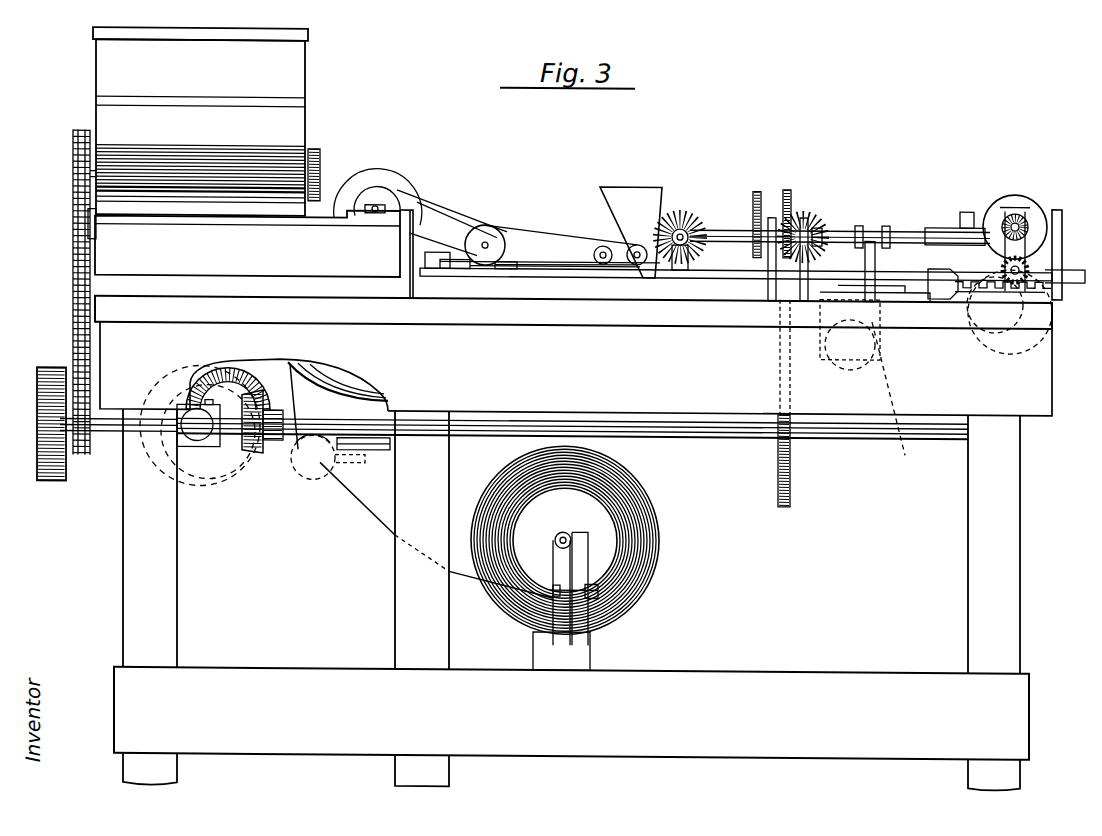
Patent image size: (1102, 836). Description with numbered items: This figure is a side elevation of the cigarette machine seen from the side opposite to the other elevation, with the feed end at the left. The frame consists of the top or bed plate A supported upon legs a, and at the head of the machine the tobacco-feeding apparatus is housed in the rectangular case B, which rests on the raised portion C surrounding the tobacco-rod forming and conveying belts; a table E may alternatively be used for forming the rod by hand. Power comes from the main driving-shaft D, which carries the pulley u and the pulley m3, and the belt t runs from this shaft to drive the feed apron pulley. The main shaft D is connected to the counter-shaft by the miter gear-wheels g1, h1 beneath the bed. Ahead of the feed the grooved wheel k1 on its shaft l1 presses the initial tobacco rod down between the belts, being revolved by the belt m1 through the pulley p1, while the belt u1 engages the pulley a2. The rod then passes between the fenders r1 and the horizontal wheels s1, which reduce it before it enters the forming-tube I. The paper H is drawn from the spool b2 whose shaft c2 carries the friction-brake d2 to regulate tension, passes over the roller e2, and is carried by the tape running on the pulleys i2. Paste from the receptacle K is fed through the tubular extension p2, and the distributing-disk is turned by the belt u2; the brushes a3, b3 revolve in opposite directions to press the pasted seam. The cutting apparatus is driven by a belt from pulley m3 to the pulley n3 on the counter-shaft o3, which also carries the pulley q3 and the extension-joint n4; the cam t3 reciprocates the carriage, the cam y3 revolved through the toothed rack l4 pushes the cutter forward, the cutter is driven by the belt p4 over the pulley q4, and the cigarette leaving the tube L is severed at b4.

The top or bed plate A is at (118, 306).
The legs a is at (118, 495).
The rectangular case B is at (205, 121).
The raised portion C is at (254, 253).
The table E is at (76, 210).
The belt t is at (73, 289).
The pulley u is at (48, 406).
The main driving-shaft D is at (108, 437).
The miter gear-wheel h1 is at (240, 422).
The miter gear-wheel g1 is at (262, 452).
The roller e2 is at (313, 478).
The pulley i2 is at (340, 376).
The spool b2 is at (587, 521).
The shaft c2 is at (554, 537).
The friction-brake d2 is at (583, 549).
The paper H is at (612, 575).
The pulley p1 is at (372, 188).
The grooved wheel k1 is at (386, 196).
The shaft l1 is at (404, 191).
The belt m1 is at (440, 226).
The belt u1 is at (452, 249).
The pulley a2 is at (422, 274).
The tubular extension p2 is at (567, 224).
The forming-tube I is at (575, 273).
The fenders r1 is at (453, 267).
The horizontal wheels s1 is at (507, 267).
The paste receptacle K is at (632, 185).
The brush b3 is at (684, 203).
The belt u2 is at (742, 227).
The pulley q3 is at (756, 188).
The pulley n3 is at (788, 190).
The brush a3 is at (857, 201).
The counter-shaft o3 is at (876, 217).
The tube L is at (890, 260).
The extension-joint n4 is at (942, 219).
The pulley q4 is at (1004, 197).
The cam y3 is at (1042, 270).
The cutting point b4 is at (1068, 276).
The toothed rack l4 is at (1008, 288).
The belt p4 is at (1042, 344).
The cam t3 is at (871, 387).
The pulley m3 is at (792, 466).